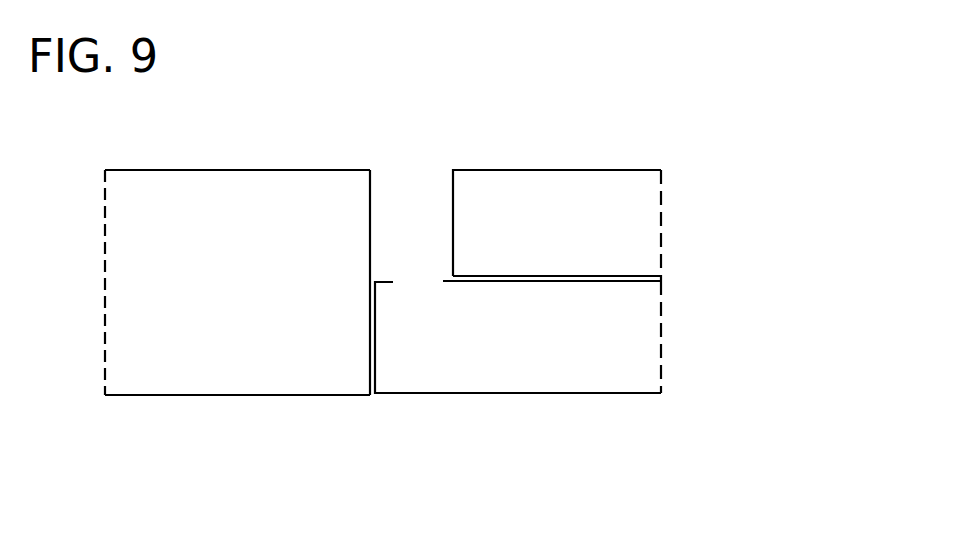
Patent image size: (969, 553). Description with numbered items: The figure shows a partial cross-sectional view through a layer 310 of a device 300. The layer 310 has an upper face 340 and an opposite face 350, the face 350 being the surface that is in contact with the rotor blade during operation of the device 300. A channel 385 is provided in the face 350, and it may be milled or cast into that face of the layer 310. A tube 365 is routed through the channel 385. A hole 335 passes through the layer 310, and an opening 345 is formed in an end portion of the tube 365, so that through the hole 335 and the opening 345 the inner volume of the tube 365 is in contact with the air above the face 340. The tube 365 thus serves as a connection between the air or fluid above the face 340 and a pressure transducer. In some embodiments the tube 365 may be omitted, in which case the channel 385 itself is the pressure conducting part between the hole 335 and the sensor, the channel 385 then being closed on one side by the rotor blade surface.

The device 300 is at (772, 525).
The layer 310 is at (240, 378).
The hole 335 is at (420, 222).
The face 340 is at (203, 169).
The opening 345 is at (425, 285).
The face 350 is at (325, 395).
The tube 365 is at (637, 365).
The channel 385 is at (575, 282).